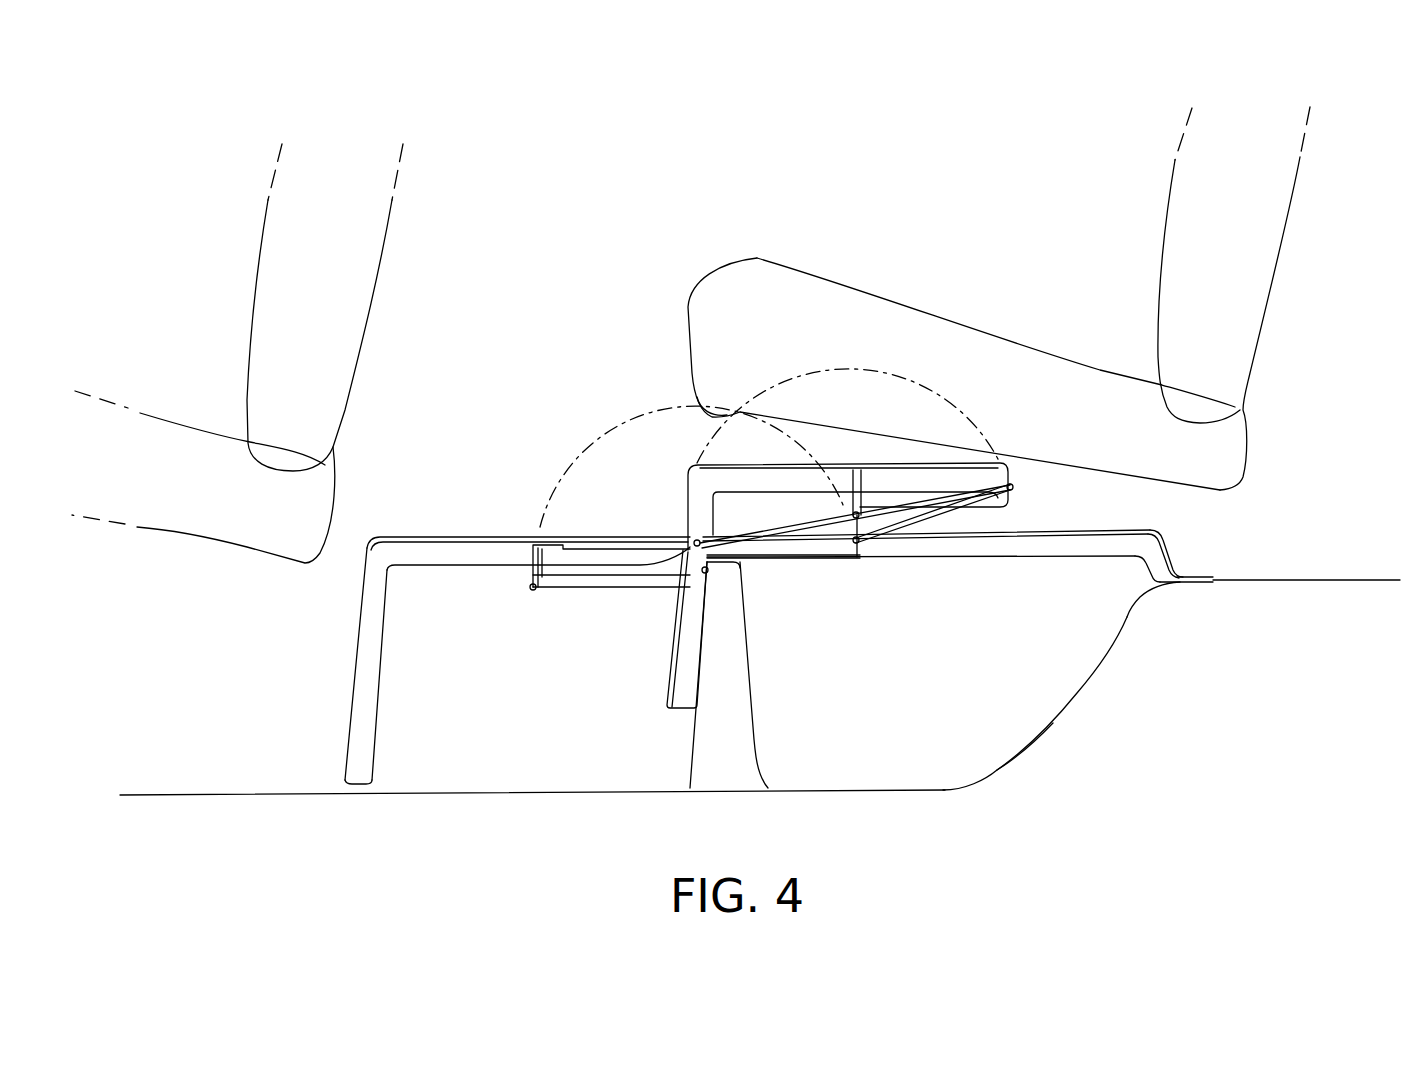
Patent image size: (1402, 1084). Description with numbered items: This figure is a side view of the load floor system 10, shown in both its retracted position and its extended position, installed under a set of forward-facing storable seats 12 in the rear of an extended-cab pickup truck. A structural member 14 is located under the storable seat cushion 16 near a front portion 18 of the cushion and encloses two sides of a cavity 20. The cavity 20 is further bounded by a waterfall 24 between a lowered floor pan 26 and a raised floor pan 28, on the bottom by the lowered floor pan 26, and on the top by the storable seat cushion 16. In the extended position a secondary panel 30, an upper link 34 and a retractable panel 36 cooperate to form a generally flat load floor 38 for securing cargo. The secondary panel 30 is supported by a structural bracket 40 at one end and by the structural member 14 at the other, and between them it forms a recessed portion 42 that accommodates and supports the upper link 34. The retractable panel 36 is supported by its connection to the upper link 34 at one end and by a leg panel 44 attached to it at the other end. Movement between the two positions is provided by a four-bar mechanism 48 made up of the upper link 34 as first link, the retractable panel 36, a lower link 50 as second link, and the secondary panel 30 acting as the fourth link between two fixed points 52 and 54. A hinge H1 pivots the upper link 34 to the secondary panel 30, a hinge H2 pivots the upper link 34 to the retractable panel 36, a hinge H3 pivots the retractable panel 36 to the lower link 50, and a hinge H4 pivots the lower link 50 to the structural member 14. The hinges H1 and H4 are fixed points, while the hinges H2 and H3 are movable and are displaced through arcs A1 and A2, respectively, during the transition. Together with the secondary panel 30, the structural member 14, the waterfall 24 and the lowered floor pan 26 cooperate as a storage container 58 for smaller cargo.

The load floor system 10 is at (558, 322).
The storable seats 12 is at (1250, 252).
The structural member 14 is at (737, 777).
The storable seat cushion 16 is at (806, 285).
The front portion 18 is at (693, 405).
The cavity 20 is at (1037, 630).
The waterfall 24 is at (1133, 605).
The lowered floor pan 26 is at (947, 790).
The raised floor pan 28 is at (1303, 582).
The secondary panel 30 is at (1113, 523).
The upper link 34 is at (998, 512).
The retractable panel 36 is at (440, 537).
The load floor 38 is at (600, 527).
The structural bracket 40 is at (1177, 575).
The recessed portion 42 is at (813, 565).
The leg panel 44 is at (375, 720).
The four-bar mechanism 48 is at (640, 630).
The lower link 50 is at (608, 590).
The fixed point 52 is at (868, 540).
The fixed point 54 is at (712, 577).
The storage container 58 is at (977, 677).
The arc A1 is at (810, 373).
The arc A2 is at (620, 423).
The hinge H1 is at (866, 553).
The hinge H2 is at (700, 540).
The hinge H3 is at (530, 588).
The hinge H4 is at (707, 572).